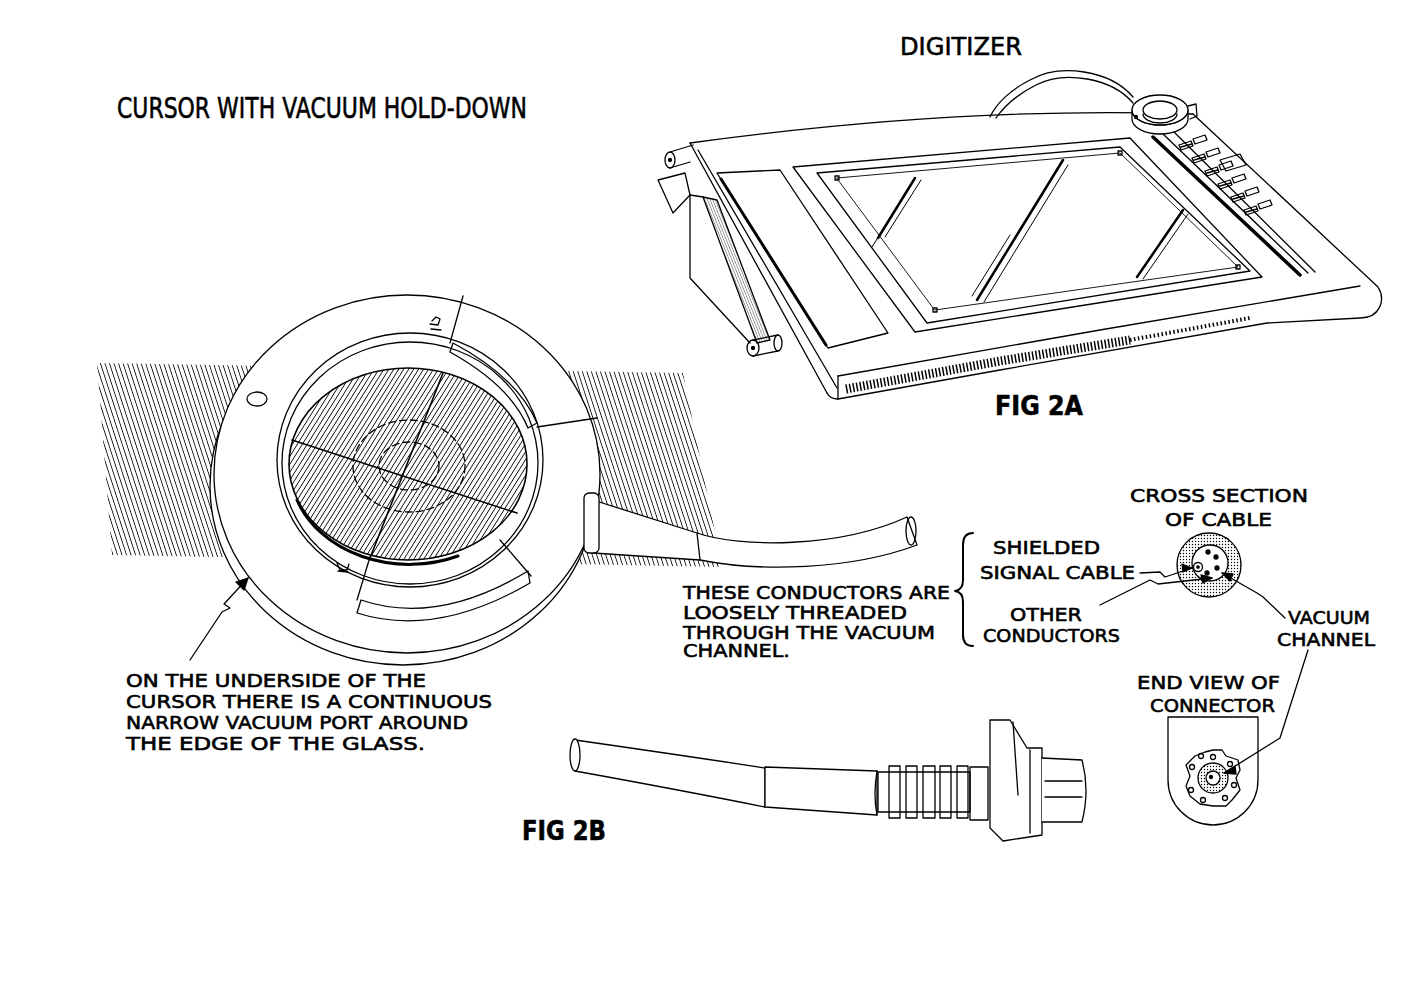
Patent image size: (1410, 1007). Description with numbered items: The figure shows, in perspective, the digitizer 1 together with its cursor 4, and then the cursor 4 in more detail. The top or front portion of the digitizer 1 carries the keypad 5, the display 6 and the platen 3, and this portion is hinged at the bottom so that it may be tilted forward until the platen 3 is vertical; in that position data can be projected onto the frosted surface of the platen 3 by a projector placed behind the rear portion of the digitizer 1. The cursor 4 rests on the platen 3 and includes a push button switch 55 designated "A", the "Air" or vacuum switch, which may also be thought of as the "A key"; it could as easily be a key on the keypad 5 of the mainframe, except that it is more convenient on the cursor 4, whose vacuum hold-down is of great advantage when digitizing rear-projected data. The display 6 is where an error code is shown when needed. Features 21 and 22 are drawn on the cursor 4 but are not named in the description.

In FIG. 2A, the digitizer 1 is at (1019, 265).
In FIG. 2A, the platen 3 is at (984, 225).
In FIG. 2A, the cursor 4 is at (1186, 106).
In FIG. 2B, the cursor 4 is at (405, 468).
In FIG. 2A, the keypad 5 is at (1220, 147).
In FIG. 2A, the display 6 is at (1250, 175).
In FIG. 2B, the hole 21 is at (231, 362).
In FIG. 2B, the vacuum port segment 22 is at (445, 608).
In FIG. 2B, the push button switch 55 is at (496, 334).